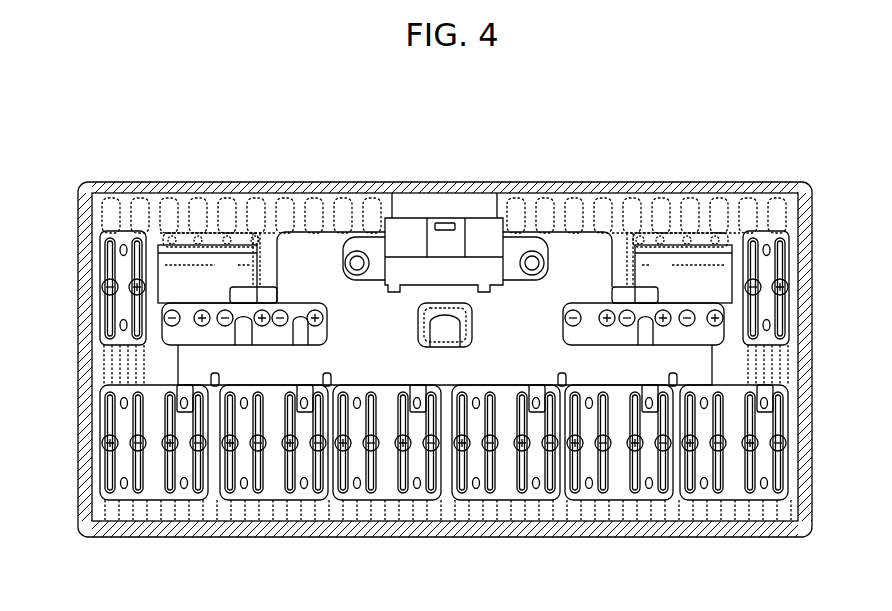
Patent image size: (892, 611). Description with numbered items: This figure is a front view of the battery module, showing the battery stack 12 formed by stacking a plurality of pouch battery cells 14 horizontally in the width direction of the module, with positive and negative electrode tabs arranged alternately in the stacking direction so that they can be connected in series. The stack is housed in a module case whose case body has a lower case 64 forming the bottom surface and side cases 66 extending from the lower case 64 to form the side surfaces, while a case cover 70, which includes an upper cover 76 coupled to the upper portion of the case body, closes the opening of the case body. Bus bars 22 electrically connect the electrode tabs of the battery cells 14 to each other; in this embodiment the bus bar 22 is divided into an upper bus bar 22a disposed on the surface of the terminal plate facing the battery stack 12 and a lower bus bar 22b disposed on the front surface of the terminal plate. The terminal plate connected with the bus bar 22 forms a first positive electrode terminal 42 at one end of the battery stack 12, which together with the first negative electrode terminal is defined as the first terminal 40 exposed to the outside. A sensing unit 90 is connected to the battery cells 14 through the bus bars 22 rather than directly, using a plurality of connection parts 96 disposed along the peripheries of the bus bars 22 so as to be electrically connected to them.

The battery stack 12 is at (420, 358).
The pouch battery cell 14 is at (598, 208).
The bus bar 22 is at (445, 359).
The upper bus bar 22a is at (135, 228).
The lower bus bar 22b is at (312, 428).
The first terminal 40 is at (445, 204).
The first positive electrode terminal 42 is at (205, 250).
The lower case 64 is at (170, 538).
The side case 66 is at (78, 470).
The case cover 70 is at (241, 182).
The upper cover 76 is at (282, 193).
The sensing unit 90 is at (323, 272).
The connection part 96 is at (645, 297).